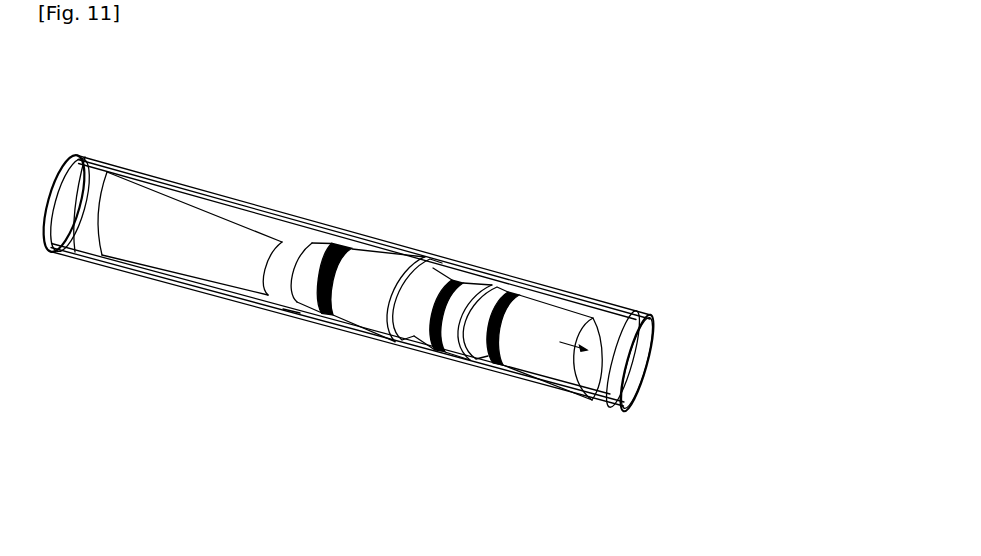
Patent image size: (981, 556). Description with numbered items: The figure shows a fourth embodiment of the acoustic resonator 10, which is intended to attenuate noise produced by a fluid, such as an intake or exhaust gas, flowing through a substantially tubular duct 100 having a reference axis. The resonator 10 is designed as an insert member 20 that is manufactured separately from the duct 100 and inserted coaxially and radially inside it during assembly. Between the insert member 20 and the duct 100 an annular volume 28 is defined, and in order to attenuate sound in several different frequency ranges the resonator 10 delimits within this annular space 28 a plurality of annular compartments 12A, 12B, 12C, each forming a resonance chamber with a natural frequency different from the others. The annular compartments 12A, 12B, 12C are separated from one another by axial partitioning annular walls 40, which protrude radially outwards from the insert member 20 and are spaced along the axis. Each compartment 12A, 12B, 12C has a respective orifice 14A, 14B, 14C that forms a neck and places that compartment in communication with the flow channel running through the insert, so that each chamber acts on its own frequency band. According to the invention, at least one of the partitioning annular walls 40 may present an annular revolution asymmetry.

The duct 100 is at (147, 174).
The acoustic resonator 10 is at (142, 250).
The insert member 20 is at (212, 292).
The annular volume 28 is at (266, 312).
The annular compartment 12A is at (252, 213).
The annular compartment 12B is at (444, 262).
The annular compartment 12C is at (565, 300).
The orifice 14A is at (333, 241).
The orifice 14B is at (435, 352).
The orifice 14C is at (508, 290).
The axial partitioning annular wall 40 is at (395, 345).